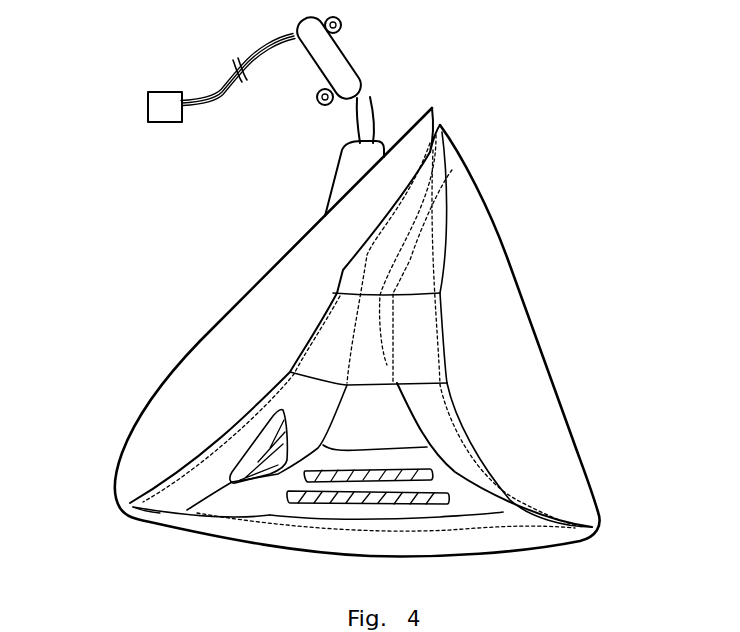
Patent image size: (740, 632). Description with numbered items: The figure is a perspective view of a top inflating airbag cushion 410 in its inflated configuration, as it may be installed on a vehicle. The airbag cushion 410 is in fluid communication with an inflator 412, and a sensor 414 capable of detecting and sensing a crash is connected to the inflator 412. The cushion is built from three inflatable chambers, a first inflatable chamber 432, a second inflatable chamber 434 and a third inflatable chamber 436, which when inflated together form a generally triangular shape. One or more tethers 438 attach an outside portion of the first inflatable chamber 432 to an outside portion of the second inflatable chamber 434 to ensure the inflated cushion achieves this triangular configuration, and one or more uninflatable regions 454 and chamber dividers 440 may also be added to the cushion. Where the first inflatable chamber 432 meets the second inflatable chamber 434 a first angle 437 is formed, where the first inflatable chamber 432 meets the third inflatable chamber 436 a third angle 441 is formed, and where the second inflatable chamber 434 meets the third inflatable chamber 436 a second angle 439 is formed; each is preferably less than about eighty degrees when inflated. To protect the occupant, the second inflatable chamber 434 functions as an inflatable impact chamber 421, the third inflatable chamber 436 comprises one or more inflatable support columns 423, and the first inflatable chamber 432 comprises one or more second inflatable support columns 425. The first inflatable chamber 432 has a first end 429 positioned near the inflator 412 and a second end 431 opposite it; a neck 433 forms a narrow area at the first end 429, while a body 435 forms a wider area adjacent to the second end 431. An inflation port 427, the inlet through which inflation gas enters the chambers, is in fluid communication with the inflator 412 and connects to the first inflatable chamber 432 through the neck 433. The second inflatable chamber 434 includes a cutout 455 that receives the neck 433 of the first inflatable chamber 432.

The airbag cushion 410 is at (523, 165).
The inflator 412 is at (328, 63).
The sensor 414 is at (157, 103).
The inflatable impact chamber 421 is at (518, 320).
The inflatable support columns 423 is at (522, 538).
The second inflatable support columns 425 is at (157, 390).
The inflation port 427 is at (317, 229).
The first end 429 is at (433, 110).
The second end 431 is at (127, 485).
The first inflatable chamber 432 is at (190, 355).
The neck 433 is at (370, 262).
The second inflatable chamber 434 is at (550, 377).
The body 435 is at (127, 447).
The third inflatable chamber 436 is at (340, 560).
The first angle 437 is at (420, 262).
The tethers 438 is at (420, 313).
The second angle 439 is at (503, 512).
The chamber dividers 440 is at (450, 497).
The third angle 441 is at (227, 503).
The uninflatable regions 454 is at (232, 480).
The cutout 455 is at (452, 170).